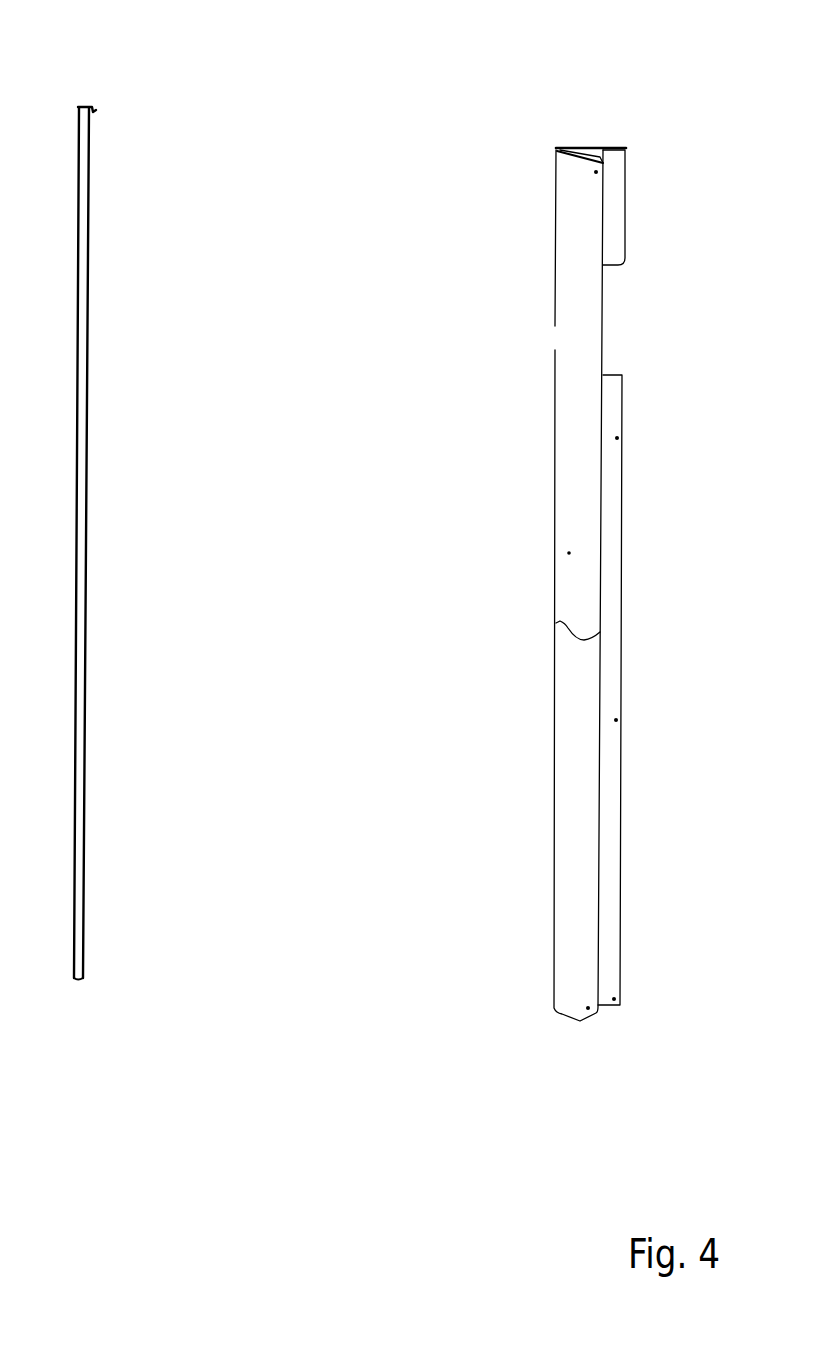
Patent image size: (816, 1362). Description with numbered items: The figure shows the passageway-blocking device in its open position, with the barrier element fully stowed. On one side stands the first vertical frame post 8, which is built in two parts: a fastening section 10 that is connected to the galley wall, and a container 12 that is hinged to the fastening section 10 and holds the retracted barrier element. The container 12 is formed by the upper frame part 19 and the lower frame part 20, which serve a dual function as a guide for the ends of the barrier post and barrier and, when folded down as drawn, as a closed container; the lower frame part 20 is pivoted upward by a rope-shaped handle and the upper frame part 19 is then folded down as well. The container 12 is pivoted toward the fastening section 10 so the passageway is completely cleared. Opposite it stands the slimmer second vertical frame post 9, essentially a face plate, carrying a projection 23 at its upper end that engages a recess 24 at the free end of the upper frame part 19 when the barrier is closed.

The first vertical frame post 8 is at (536, 513).
The second vertical frame post 9 is at (87, 430).
The fastening section 10 is at (631, 148).
The container 12 is at (536, 526).
The upper frame part 19 is at (578, 541).
The lower frame part 20 is at (570, 833).
The projection 23 is at (98, 107).
The recess 24 is at (556, 625).